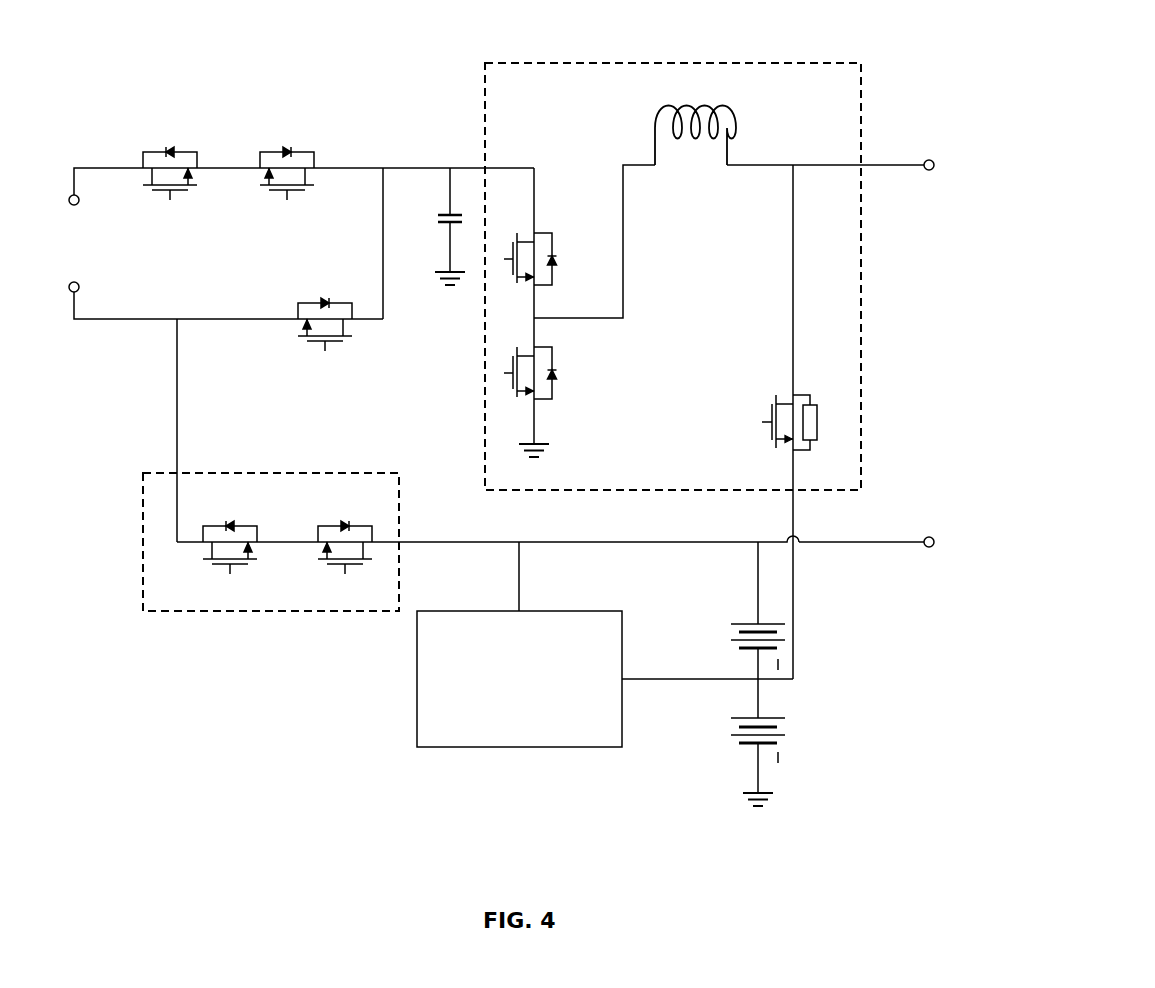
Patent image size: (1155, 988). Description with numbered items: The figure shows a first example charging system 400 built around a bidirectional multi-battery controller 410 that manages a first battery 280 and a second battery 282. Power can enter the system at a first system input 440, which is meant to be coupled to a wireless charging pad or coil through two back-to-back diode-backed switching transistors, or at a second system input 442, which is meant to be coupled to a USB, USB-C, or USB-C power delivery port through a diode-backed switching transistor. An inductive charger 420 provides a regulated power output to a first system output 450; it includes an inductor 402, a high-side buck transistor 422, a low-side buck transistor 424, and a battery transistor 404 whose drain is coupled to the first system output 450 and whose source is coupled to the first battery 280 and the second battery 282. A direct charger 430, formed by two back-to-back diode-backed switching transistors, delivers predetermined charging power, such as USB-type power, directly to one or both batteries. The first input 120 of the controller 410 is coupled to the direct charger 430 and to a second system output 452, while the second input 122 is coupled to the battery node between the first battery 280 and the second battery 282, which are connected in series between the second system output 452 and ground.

The charging system 400 is at (1149, 20).
The inductor 402 is at (695, 150).
The battery transistor 404 is at (767, 422).
The bidirectional multi-battery controller 410 is at (603, 740).
The inductive charger 420 is at (707, 319).
The high-side buck transistor 422 is at (550, 226).
The low-side buck transistor 424 is at (550, 402).
The direct charger 430 is at (296, 508).
The first system input 440 is at (85, 189).
The second system input 442 is at (162, 298).
The first system output 450 is at (952, 165).
The second system output 452 is at (889, 542).
The first input 120 is at (690, 544).
The second input 122 is at (693, 681).
The first battery 280 is at (734, 630).
The second battery 282 is at (734, 751).